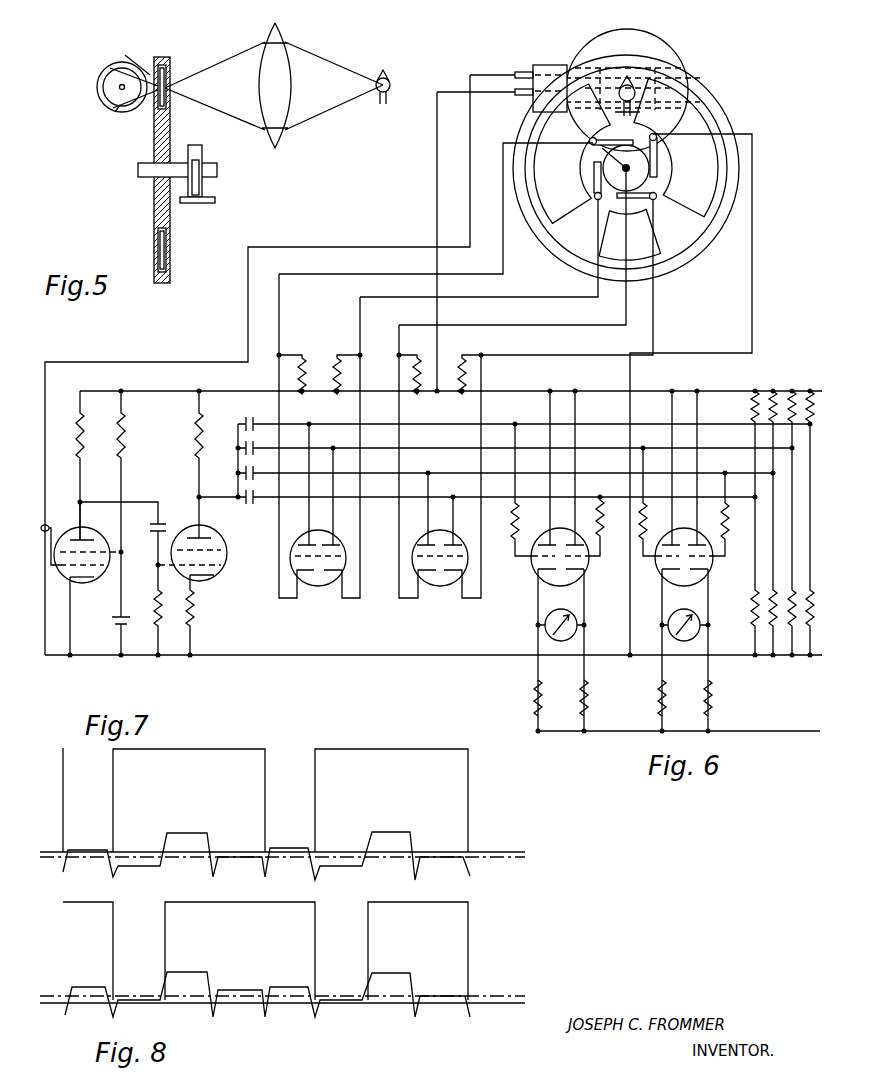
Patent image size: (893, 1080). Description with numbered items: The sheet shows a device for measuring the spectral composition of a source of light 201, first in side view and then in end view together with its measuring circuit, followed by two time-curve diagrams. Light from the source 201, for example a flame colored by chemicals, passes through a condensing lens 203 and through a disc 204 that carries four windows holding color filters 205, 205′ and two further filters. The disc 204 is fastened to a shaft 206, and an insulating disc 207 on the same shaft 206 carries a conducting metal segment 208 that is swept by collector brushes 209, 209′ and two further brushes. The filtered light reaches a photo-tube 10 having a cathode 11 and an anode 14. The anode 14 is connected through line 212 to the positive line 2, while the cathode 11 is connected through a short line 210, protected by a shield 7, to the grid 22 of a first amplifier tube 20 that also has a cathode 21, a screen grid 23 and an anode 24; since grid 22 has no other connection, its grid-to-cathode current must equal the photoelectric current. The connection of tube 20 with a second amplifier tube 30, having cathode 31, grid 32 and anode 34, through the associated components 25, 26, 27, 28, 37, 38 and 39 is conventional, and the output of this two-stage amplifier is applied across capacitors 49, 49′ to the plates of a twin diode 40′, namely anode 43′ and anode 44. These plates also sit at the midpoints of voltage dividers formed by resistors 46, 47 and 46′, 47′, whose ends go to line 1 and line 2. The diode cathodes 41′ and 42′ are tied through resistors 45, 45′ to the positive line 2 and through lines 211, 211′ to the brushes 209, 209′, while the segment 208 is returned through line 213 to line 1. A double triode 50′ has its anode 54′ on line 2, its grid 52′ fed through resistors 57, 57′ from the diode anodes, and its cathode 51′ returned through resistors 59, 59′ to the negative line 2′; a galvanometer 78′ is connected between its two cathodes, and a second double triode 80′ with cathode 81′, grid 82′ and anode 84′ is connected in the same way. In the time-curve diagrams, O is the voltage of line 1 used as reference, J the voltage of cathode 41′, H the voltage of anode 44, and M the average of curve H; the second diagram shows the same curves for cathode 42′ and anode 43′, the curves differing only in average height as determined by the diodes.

In FIG. 7, the line 1 is at (778, 660).
In FIG. 7, the positive line 2 is at (822, 391).
In FIG. 7, the negative line 2′ is at (780, 731).
In FIG. 7, the shield 7 is at (50, 525).
In FIG. 5, the photo-tube 10 is at (119, 122).
In FIG. 6, the photo-tube 10 is at (547, 58).
In FIG. 5, the cathode 11 is at (100, 98).
In FIG. 6, the cathode 11 is at (660, 75).
In FIG. 5, the anode 14 is at (130, 50).
In FIG. 6, the anode 14 is at (690, 86).
In FIG. 7, the amplifier tube 20 is at (80, 582).
In FIG. 7, the cathode 21 is at (68, 579).
In FIG. 7, the grid 22 is at (100, 568).
In FIG. 7, the screen grid 23 is at (110, 550).
In FIG. 7, the anode 24 is at (78, 525).
In FIG. 7, the condenser 25 is at (118, 620).
In FIG. 7, the resistor 26 is at (124, 448).
In FIG. 7, the resistor 27 is at (76, 443).
In FIG. 7, the coupling condenser 28 is at (162, 514).
In FIG. 7, the amplifier tube 30 is at (228, 580).
In FIG. 7, the cathode 31 is at (192, 584).
In FIG. 7, the grid 32 is at (222, 552).
In FIG. 7, the anode 34 is at (208, 526).
In FIG. 7, the resistor 37 is at (195, 446).
In FIG. 7, the grid resistor 38 is at (156, 610).
In FIG. 7, the cathode resistor 39 is at (194, 620).
In FIG. 7, the twin diode 40′ is at (322, 594).
In FIG. 7, the cathode 41′ is at (297, 600).
In FIG. 7, the cathode 42′ is at (343, 600).
In FIG. 7, the anode 43′ is at (334, 552).
In FIG. 7, the anode 44 is at (306, 542).
In FIG. 7, the resistor 45 is at (306, 365).
In FIG. 7, the resistor 45′ is at (335, 365).
In FIG. 7, the voltage divider resistor 46 is at (755, 612).
In FIG. 7, the voltage divider resistor 46′ is at (773, 612).
In FIG. 7, the voltage divider resistor 47 is at (751, 411).
In FIG. 7, the voltage divider resistor 47′ is at (770, 395).
In FIG. 7, the capacitor 49 is at (246, 495).
In FIG. 7, the capacitor 49′ is at (246, 471).
In FIG. 7, the double triode 50′ is at (552, 582).
In FIG. 7, the cathode 51′ is at (538, 575).
In FIG. 7, the grid 52′ is at (534, 557).
In FIG. 7, the anode 54′ is at (549, 540).
In FIG. 7, the resistor 57 is at (510, 489).
In FIG. 7, the resistor 57′ is at (608, 526).
In FIG. 7, the resistor 59 is at (534, 704).
In FIG. 7, the resistor 59′ is at (586, 718).
In FIG. 7, the D. C. galvanometer 78′ is at (545, 632).
In FIG. 7, the double triode 80′ is at (676, 582).
In FIG. 7, the cathode 81′ is at (662, 575).
In FIG. 7, the grid 82′ is at (658, 557).
In FIG. 7, the anode 84′ is at (671, 540).
In FIG. 5, the source of light 201 is at (385, 78).
In FIG. 6, the source of light 201 is at (620, 85).
In FIG. 5, the condensing lens 203 is at (290, 38).
In FIG. 6, the condensing lens 203 is at (682, 50).
In FIG. 5, the disc 204 is at (165, 57).
In FIG. 5, the color filter 205 is at (170, 100).
In FIG. 6, the color filter 205 is at (705, 95).
In FIG. 6, the color filter 205′ is at (590, 155).
In FIG. 5, the shaft 206 is at (138, 170).
In FIG. 5, the insulating disc 207 is at (202, 150).
In FIG. 6, the insulating disc 207 is at (660, 186).
In FIG. 5, the conducting metal segment 208 is at (200, 180).
In FIG. 6, the conducting metal segment 208 is at (600, 178).
In FIG. 5, the collector brush 209 is at (204, 204).
In FIG. 6, the collector brush 209 is at (600, 235).
In FIG. 6, the collector brush 209′ is at (650, 230).
In FIG. 6, the line 210 is at (380, 247).
In FIG. 6, the line 211 is at (484, 272).
In FIG. 6, the line 211′ is at (500, 300).
In FIG. 6, the line 212 is at (437, 226).
In FIG. 6, the line 213 is at (640, 338).
In FIG. 8, the cathode voltage curve J is at (68, 812).
In FIG. 8, the anode voltage curve H is at (398, 832).
In FIG. 8, the reference voltage O is at (494, 852).
In FIG. 8, the average of curve H M is at (506, 862).